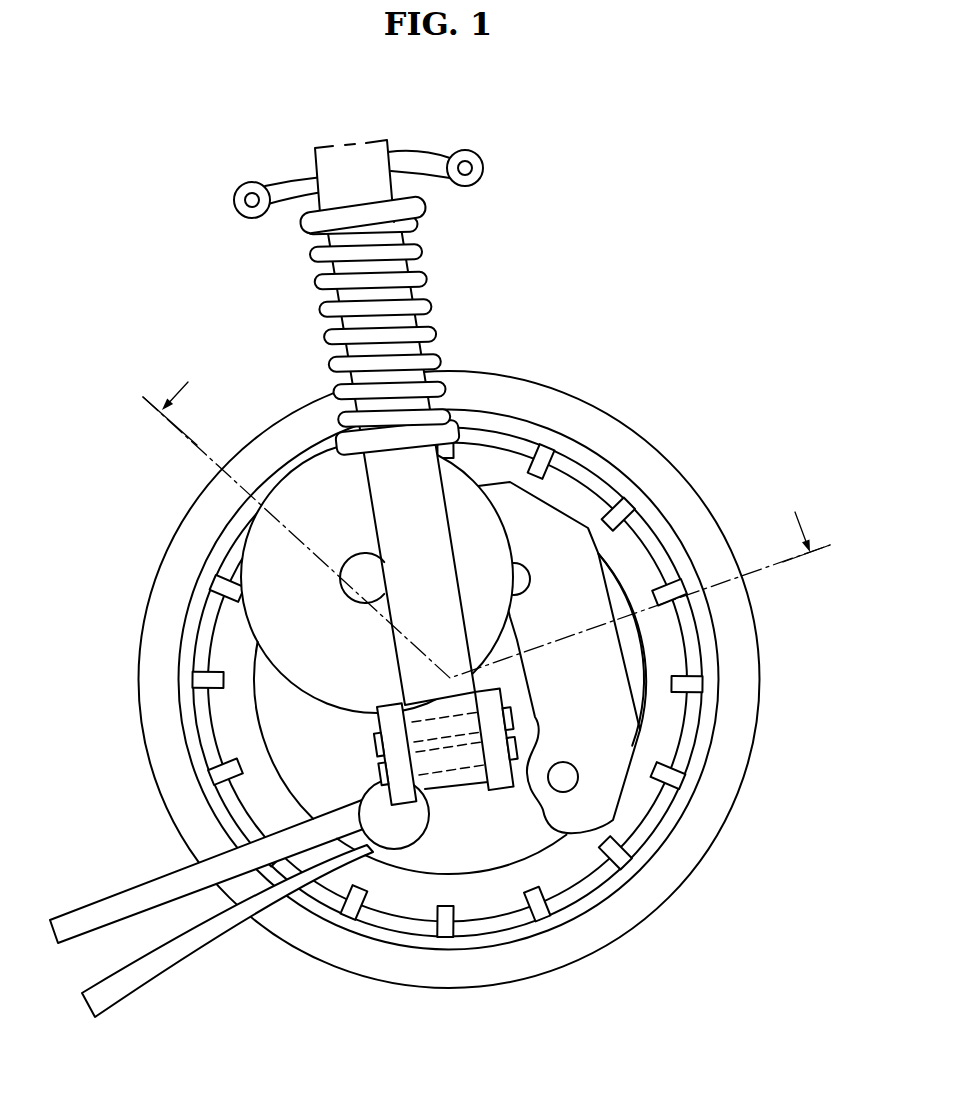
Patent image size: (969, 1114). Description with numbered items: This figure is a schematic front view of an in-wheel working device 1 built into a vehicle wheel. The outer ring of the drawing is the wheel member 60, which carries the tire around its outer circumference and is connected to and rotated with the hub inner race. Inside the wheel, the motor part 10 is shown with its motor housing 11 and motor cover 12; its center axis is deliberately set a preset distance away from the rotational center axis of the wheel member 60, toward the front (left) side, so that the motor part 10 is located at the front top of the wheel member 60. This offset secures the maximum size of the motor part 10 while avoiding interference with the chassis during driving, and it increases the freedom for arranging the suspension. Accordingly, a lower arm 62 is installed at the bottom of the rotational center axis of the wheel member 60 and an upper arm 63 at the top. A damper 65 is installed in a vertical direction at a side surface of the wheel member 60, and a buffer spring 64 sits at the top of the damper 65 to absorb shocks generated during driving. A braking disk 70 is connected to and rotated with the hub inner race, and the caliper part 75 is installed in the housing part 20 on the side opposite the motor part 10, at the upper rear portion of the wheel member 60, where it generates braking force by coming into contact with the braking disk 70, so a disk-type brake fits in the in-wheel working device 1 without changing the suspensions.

The in-wheel working device 1 is at (452, 580).
The motor part 10 is at (294, 450).
The motor housing 11 is at (280, 542).
The motor cover 12 is at (360, 577).
The housing part 20 is at (230, 718).
The wheel member 60 is at (432, 943).
The lower arm 62 is at (318, 863).
The upper arm 63 is at (428, 153).
The buffer spring 64 is at (424, 308).
The damper 65 is at (418, 540).
The braking disk 70 is at (488, 848).
The caliper part 75 is at (588, 653).